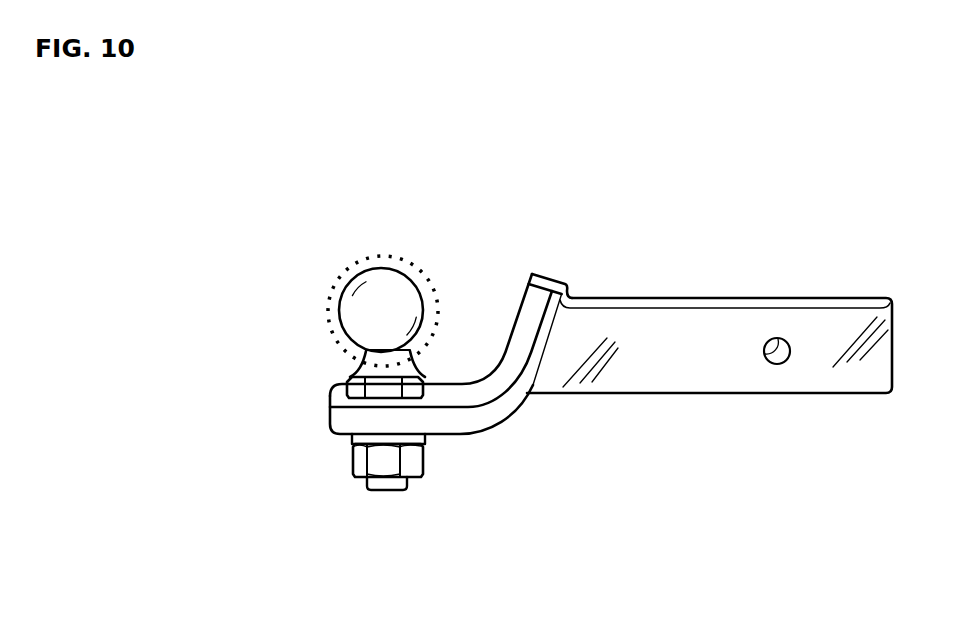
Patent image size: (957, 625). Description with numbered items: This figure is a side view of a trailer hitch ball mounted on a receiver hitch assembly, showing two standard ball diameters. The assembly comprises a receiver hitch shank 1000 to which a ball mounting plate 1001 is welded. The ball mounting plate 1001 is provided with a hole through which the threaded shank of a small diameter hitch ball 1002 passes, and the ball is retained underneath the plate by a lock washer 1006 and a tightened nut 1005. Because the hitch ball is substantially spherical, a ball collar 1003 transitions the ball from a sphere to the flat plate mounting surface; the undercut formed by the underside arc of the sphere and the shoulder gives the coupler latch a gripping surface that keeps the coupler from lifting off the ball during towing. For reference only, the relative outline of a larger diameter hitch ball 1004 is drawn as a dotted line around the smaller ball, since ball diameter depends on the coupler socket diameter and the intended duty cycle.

The receiver hitch shank 1000 is at (760, 297).
The ball mounting plate 1001 is at (503, 418).
The small diameter hitch ball 1002 is at (367, 307).
The ball collar 1003 is at (352, 366).
The larger diameter hitch ball 1004 is at (351, 264).
The tightened nut 1005 is at (357, 467).
The lock washer 1006 is at (352, 437).